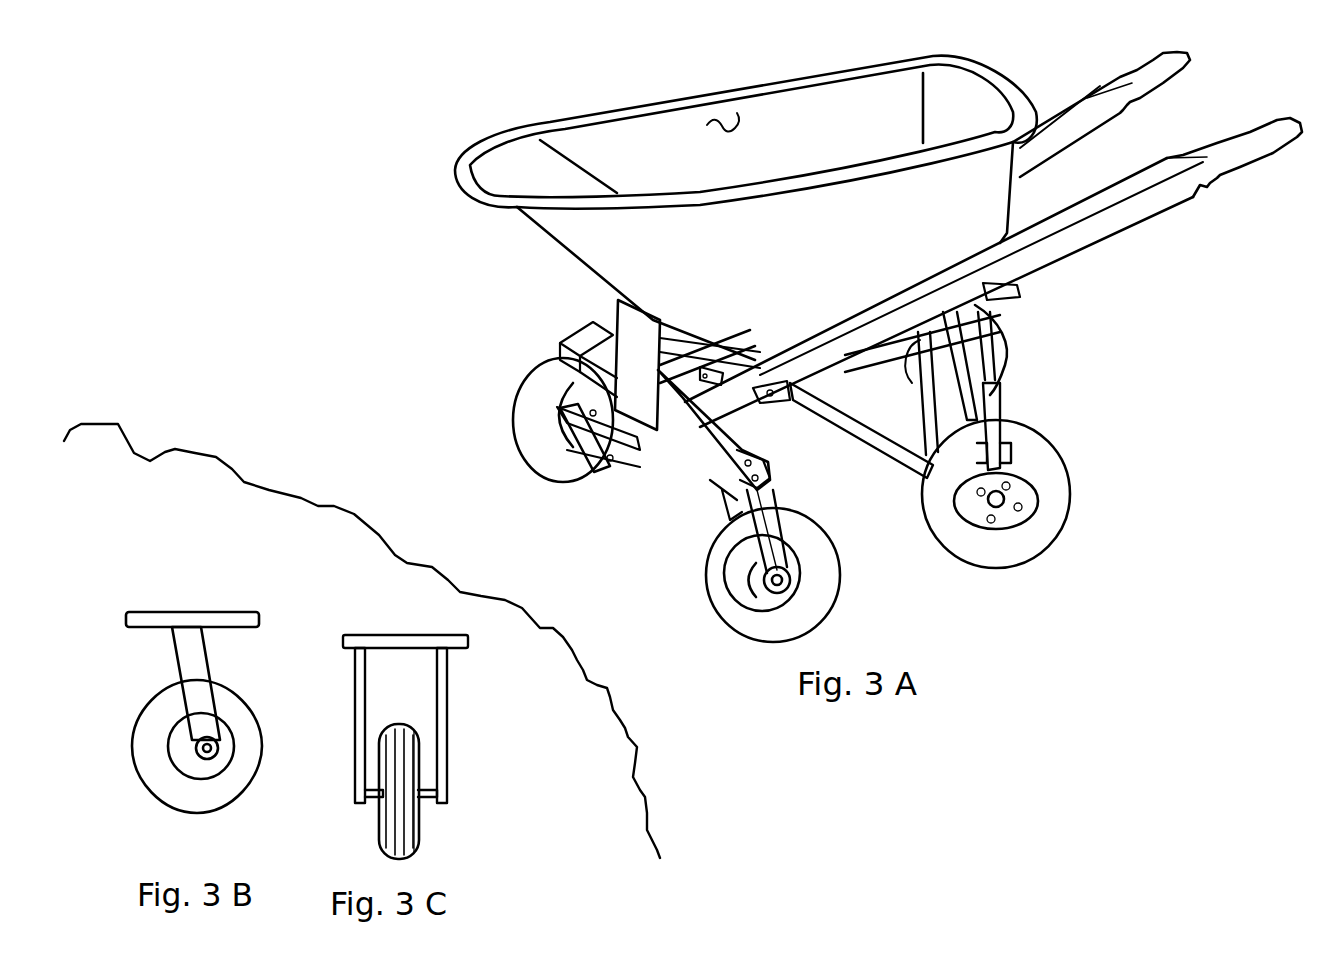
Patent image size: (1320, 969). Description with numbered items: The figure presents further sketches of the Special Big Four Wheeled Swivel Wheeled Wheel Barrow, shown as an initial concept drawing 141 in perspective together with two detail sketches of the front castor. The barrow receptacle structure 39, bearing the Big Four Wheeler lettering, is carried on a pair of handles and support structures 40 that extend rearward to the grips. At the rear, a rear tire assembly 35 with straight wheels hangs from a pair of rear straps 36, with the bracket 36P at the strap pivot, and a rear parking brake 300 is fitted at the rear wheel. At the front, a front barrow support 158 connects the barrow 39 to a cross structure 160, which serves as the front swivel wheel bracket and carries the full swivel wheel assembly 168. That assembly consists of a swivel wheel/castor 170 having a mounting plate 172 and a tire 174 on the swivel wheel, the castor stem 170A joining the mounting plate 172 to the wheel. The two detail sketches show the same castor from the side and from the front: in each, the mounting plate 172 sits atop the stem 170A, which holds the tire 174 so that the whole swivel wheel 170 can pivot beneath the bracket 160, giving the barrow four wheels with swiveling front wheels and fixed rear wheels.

In FIG. 3A, the barrow receptacle structure 39 is at (735, 118).
In FIG. 3A, the pair of handles and support structures 40 is at (1057, 105).
In FIG. 3A, the front barrow support 158 is at (618, 300).
In FIG. 3A, the cross structure/front swivel wheel bracket 160 is at (563, 347).
In FIG. 3A, the initial concept drawing 141 is at (360, 323).
In FIG. 3A, the pair of rear straps 36 is at (1000, 350).
In FIG. 3A, the rear tire assembly 35 is at (1008, 355).
In FIG. 3A, the rear parking brake 300 is at (1000, 407).
In FIG. 3A, the leg pivot bracket 36P is at (927, 400).
In FIG. 3A, the mounting plate 172 is at (747, 493).
In FIG. 3B, the mounting plate 172 is at (204, 612).
In FIG. 3A, the full swivel wheel assembly 168 is at (592, 500).
In FIG. 3A, the caster stem 170A is at (767, 533).
In FIG. 3B, the caster stem 170A is at (194, 660).
In FIG. 3C, the caster stem 170A is at (448, 712).
In FIG. 3A, the tire 174 is at (737, 623).
In FIG. 3B, the tire 174 is at (138, 755).
In FIG. 3C, the tire 174 is at (399, 791).
In FIG. 3B, the swivel wheel/castor 170 is at (162, 818).
In FIG. 3C, the swivel wheel/castor 170 is at (507, 803).